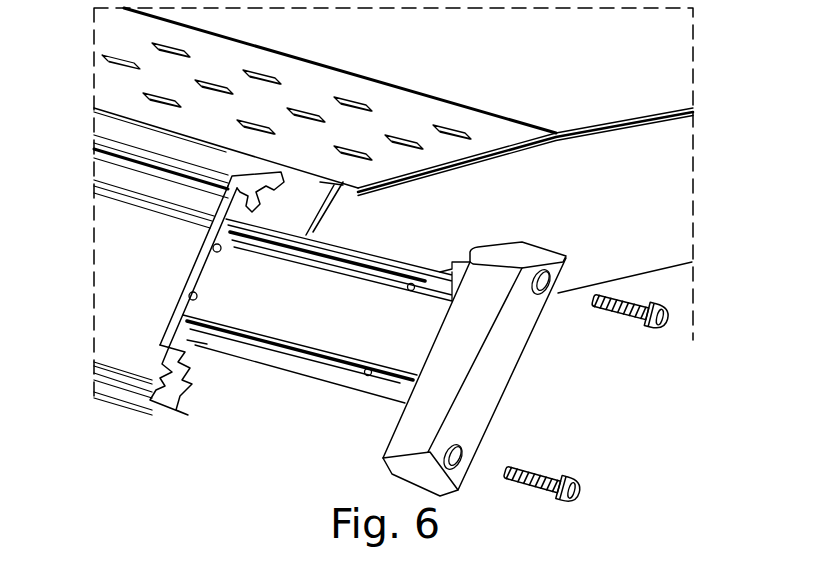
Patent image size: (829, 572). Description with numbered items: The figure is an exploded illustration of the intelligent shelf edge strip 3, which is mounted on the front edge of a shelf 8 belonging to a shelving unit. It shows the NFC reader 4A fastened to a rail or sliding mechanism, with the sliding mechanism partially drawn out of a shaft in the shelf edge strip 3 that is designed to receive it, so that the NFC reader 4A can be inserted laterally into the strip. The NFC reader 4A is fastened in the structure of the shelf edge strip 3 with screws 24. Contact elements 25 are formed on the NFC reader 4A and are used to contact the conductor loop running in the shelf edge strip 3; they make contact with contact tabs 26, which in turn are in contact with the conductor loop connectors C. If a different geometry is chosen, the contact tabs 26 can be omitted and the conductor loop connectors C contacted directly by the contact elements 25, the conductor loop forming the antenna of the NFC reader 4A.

The shelf edge strip 3 is at (101, 246).
The shelf 8 is at (673, 198).
The contact tab 26 is at (213, 228).
The conductor loop connector C is at (190, 290).
The contact element 25 is at (410, 285).
The NFC reader 4A is at (505, 357).
The screw 24 is at (665, 322).